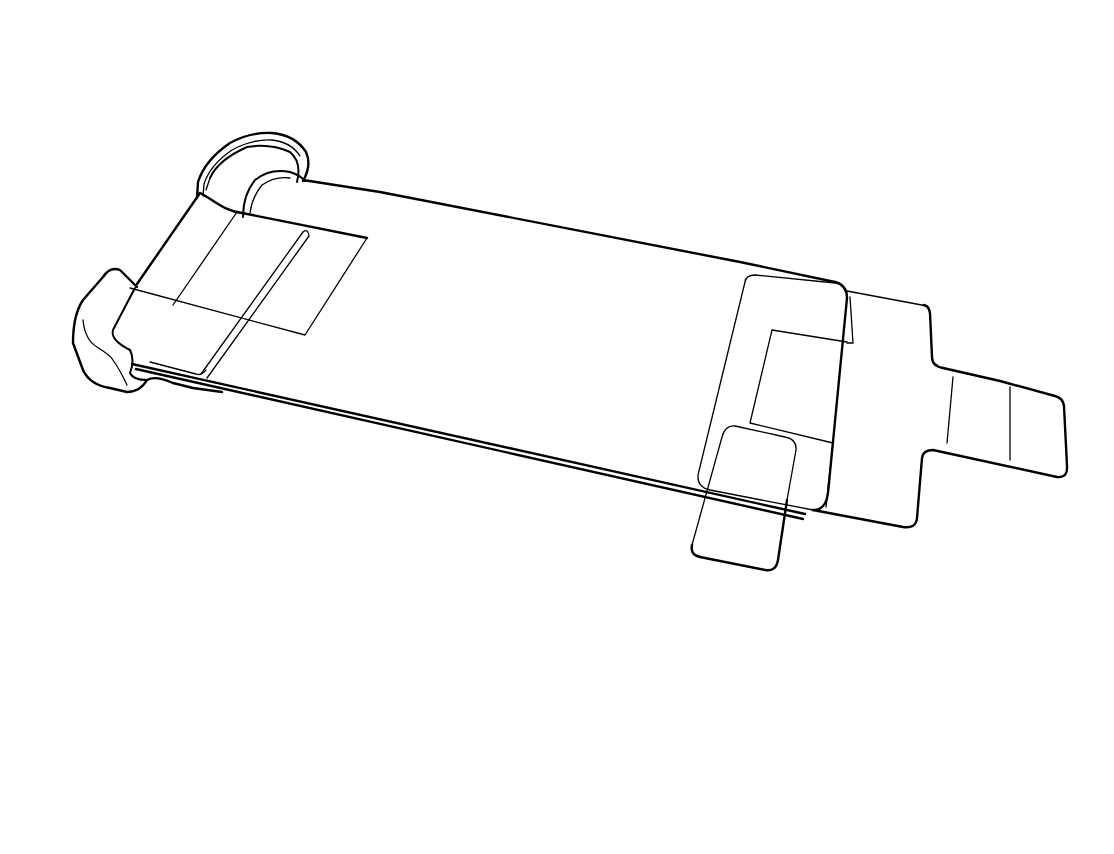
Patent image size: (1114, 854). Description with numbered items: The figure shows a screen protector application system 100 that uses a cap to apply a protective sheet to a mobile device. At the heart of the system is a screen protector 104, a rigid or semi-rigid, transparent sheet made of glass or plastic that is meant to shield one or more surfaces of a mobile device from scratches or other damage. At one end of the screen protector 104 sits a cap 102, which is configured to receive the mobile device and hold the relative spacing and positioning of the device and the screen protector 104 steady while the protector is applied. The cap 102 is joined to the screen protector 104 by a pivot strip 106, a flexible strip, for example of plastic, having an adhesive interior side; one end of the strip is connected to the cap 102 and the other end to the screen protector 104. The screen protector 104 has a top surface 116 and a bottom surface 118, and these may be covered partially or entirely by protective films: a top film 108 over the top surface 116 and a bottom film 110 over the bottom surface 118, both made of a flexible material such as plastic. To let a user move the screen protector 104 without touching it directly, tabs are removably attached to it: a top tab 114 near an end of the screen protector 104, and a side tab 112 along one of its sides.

The screen protector application system 100 is at (148, 139).
The cap 102 is at (268, 137).
The screen protector 104 is at (408, 214).
The pivot strip 106 is at (168, 253).
The top film 108 is at (687, 270).
The bottom film 110 is at (632, 484).
The side tab 112 is at (747, 562).
The top tab 114 is at (912, 328).
The top surface 116 is at (634, 258).
The bottom surface 118 is at (439, 465).